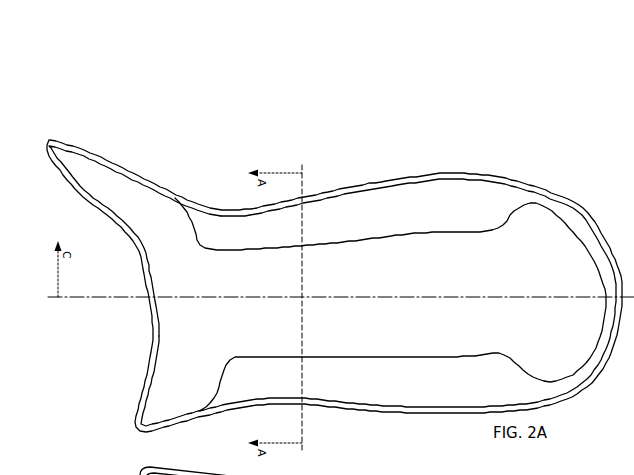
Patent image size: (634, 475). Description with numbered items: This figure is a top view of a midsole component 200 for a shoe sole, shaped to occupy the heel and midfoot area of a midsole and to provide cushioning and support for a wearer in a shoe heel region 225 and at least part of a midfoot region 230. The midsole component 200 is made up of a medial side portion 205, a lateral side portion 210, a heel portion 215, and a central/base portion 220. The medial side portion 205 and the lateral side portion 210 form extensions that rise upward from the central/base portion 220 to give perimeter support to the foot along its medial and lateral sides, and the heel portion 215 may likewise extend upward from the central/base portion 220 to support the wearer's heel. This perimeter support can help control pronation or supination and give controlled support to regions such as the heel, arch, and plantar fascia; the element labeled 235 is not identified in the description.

The midsole component 200 is at (549, 68).
The medial side portion 205 is at (353, 204).
The lateral side portion 210 is at (413, 388).
The heel portion 215 is at (593, 200).
The central/base portion 220 is at (233, 324).
The shoe heel region 225 is at (506, 276).
The midfoot region 230 is at (170, 258).
The edge portion 235 is at (630, 413).